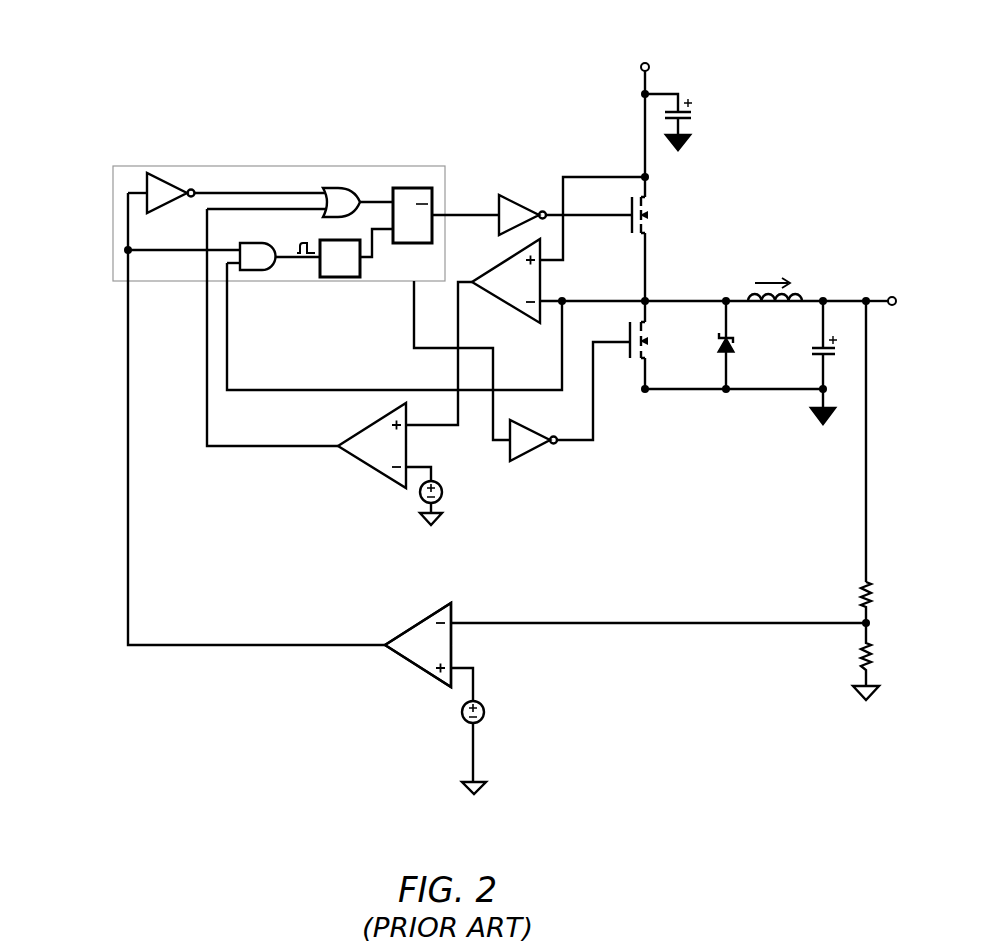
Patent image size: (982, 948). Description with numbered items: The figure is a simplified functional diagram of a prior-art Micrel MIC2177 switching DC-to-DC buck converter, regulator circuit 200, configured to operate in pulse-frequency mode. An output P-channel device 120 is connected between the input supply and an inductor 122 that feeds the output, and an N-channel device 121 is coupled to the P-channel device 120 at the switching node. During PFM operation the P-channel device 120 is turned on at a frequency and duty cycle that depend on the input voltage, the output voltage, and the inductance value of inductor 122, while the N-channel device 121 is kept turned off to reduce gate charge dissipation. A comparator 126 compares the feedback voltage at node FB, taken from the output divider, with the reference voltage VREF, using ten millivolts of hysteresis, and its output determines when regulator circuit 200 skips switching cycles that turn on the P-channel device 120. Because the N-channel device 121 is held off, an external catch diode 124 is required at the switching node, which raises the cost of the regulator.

The regulator circuit 200 is at (100, 91).
The P-channel device 120 is at (643, 206).
The N-channel device 121 is at (630, 346).
The inductor 122 is at (798, 292).
The catch diode 124 is at (731, 346).
The comparator 126 is at (451, 645).